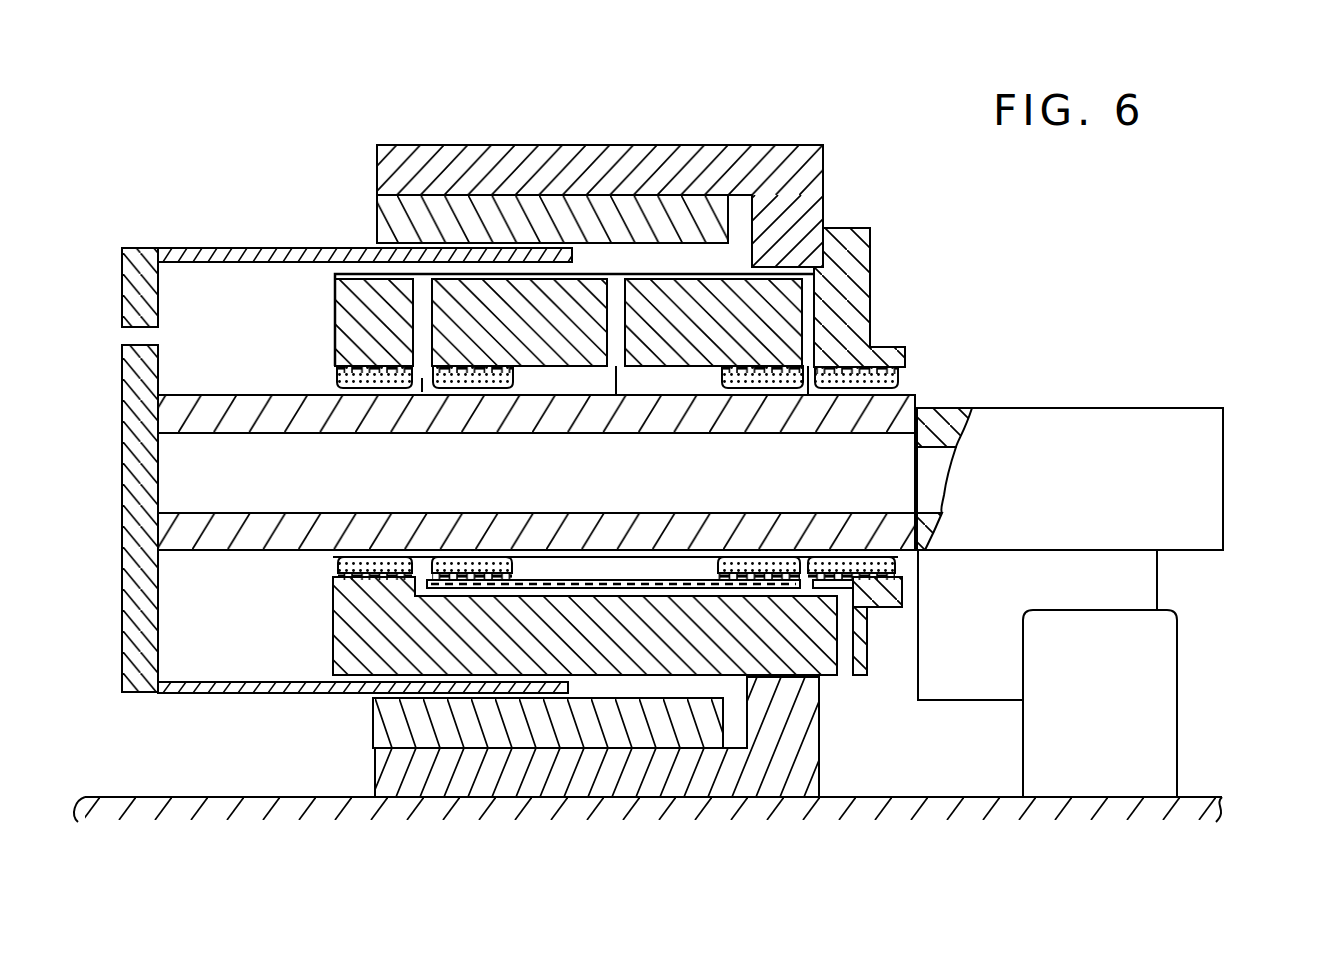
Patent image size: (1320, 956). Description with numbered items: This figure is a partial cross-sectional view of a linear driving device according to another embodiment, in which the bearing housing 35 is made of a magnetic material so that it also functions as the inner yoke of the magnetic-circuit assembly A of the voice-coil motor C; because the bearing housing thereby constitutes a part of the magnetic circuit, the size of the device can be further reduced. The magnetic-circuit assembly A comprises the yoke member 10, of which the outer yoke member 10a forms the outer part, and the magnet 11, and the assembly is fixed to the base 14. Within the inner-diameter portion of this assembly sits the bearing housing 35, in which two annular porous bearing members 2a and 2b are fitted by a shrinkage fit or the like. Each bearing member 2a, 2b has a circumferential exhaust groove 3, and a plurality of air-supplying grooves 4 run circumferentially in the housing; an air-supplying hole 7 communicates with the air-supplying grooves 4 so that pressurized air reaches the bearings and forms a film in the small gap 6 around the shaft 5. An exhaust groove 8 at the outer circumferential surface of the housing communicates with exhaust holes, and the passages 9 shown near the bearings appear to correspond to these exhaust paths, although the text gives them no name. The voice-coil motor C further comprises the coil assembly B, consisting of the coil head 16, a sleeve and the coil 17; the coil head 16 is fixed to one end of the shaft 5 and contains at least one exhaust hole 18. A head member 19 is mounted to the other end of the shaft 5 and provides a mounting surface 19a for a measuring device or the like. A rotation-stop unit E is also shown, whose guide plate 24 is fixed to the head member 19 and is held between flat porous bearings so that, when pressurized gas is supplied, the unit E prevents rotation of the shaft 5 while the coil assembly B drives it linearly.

The annular porous bearing member 2a is at (457, 558).
The annular porous bearing member 2b is at (752, 558).
The exhaust groove 3 is at (420, 558).
The air-supplying grooves 4 is at (905, 358).
The shaft 5 is at (527, 530).
The small gap 6 is at (336, 555).
The air-supplying hole 7 is at (840, 672).
The exhaust groove 8 is at (340, 275).
The slot 9 is at (422, 386).
The yoke member 10 is at (823, 166).
The outer yoke member 10a is at (388, 160).
The magnet 11 is at (388, 213).
The base 14 is at (1222, 810).
The coil head 16 is at (122, 455).
The coil 17 is at (257, 250).
The exhaust hole 18 is at (122, 336).
The head member 19 is at (1130, 410).
The mounting surface 19a is at (1223, 440).
The guide plate 24 is at (1160, 582).
The bearing housing 35 is at (862, 300).
The magnetic-circuit assembly A is at (842, 207).
The coil assembly B is at (122, 238).
The voice-coil motor C is at (436, 143).
The rotation-stop unit E is at (1182, 657).